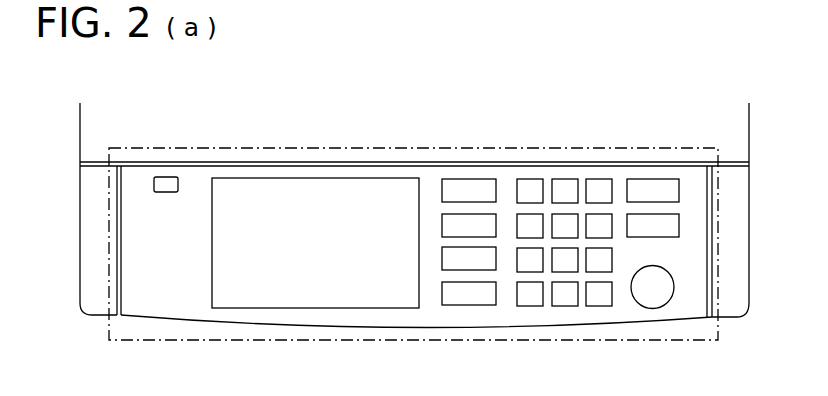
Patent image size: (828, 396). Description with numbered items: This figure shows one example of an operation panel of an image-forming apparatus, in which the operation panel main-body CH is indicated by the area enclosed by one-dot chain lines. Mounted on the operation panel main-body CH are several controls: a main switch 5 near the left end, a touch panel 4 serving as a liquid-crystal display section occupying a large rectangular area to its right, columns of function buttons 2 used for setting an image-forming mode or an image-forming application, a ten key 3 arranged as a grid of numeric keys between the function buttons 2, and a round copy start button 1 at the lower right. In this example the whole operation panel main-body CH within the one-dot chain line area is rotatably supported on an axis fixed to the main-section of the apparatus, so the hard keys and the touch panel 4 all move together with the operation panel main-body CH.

The copy start button 1 is at (653, 300).
The function button 2 is at (472, 193).
The ten key 3 is at (566, 177).
The touch panel 4 is at (313, 197).
The main switch 5 is at (165, 176).
The operation panel main-body CH is at (402, 150).